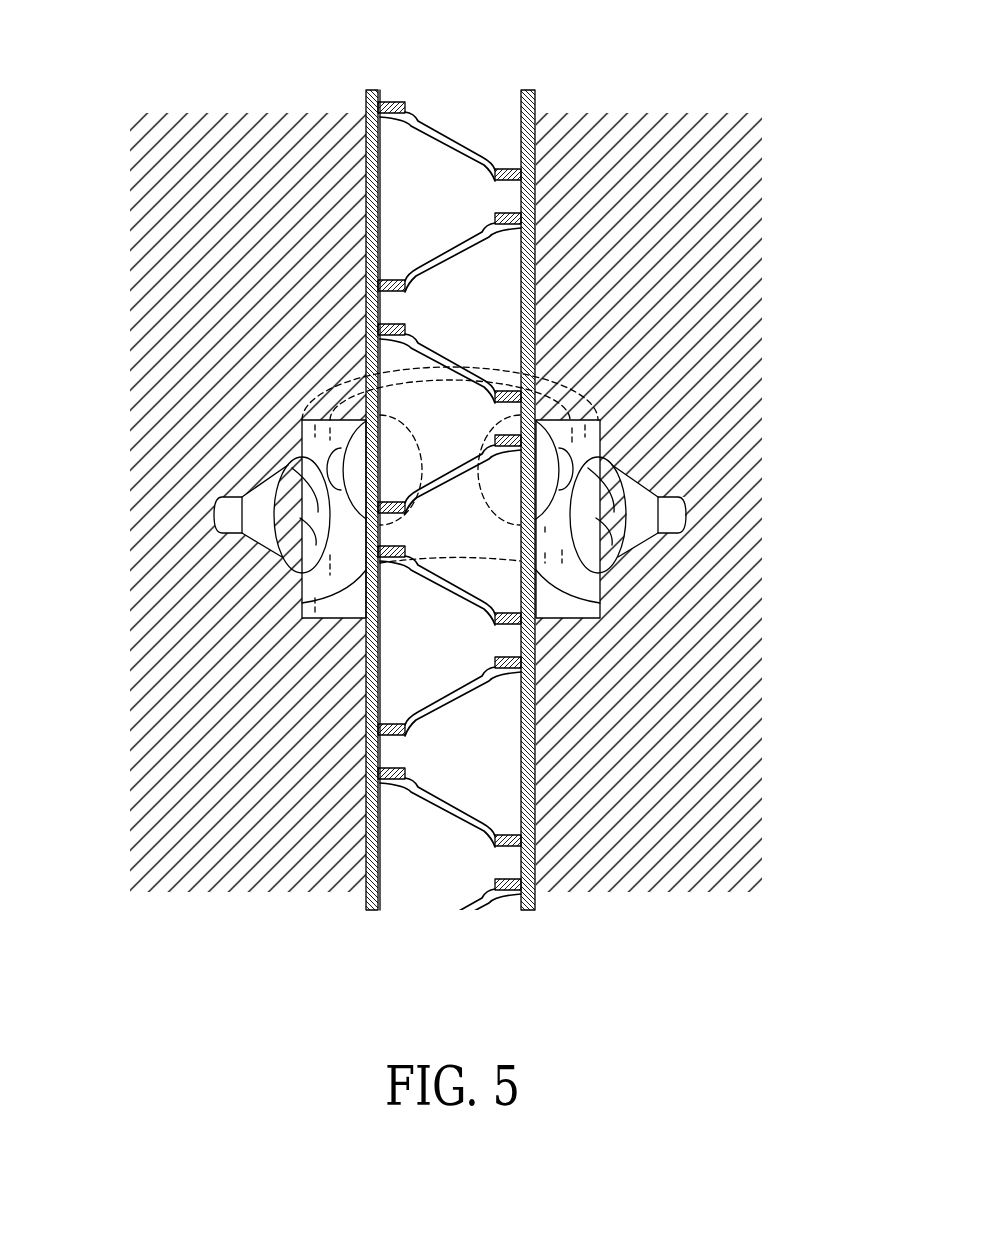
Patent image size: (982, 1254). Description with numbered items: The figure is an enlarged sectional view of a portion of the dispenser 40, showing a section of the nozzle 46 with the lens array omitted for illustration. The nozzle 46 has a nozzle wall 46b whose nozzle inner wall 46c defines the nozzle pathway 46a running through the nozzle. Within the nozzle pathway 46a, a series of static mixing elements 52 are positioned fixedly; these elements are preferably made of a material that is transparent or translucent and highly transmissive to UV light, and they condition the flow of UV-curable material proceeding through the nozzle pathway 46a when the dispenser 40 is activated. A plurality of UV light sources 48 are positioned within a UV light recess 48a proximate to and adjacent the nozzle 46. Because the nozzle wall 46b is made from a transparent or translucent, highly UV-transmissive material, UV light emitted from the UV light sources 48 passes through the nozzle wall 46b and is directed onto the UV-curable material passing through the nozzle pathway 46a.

The dispenser 40 is at (792, 353).
The nozzle 46 is at (465, 501).
The nozzle pathway 46a is at (440, 873).
The nozzle wall 46b is at (375, 90).
The nozzle inner wall 46c is at (522, 117).
The UV light source 48 is at (270, 492).
The UV light recess 48a is at (557, 606).
The static mixing element 52 is at (446, 128).